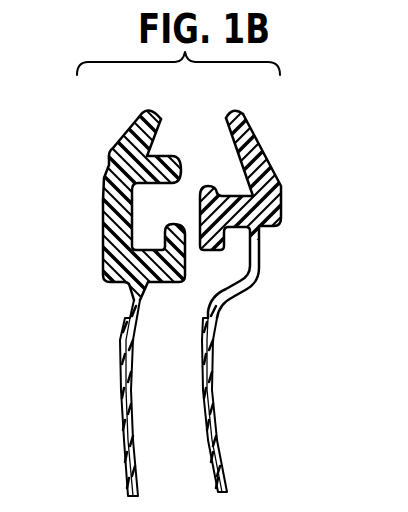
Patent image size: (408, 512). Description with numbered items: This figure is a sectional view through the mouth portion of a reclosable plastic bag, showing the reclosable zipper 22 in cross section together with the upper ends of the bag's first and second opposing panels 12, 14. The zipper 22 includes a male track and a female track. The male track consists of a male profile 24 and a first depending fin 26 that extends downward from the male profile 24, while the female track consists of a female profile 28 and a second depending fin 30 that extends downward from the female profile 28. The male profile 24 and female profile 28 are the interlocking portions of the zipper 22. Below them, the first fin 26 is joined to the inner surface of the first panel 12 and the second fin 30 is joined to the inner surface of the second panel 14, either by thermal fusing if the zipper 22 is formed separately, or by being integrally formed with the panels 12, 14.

The first panel 12 is at (218, 370).
The second panel 14 is at (121, 375).
The reclosable zipper 22 is at (224, 113).
The male profile 24 is at (249, 143).
The first depending fin 26 is at (255, 286).
The female profile 28 is at (127, 137).
The second depending fin 30 is at (129, 296).